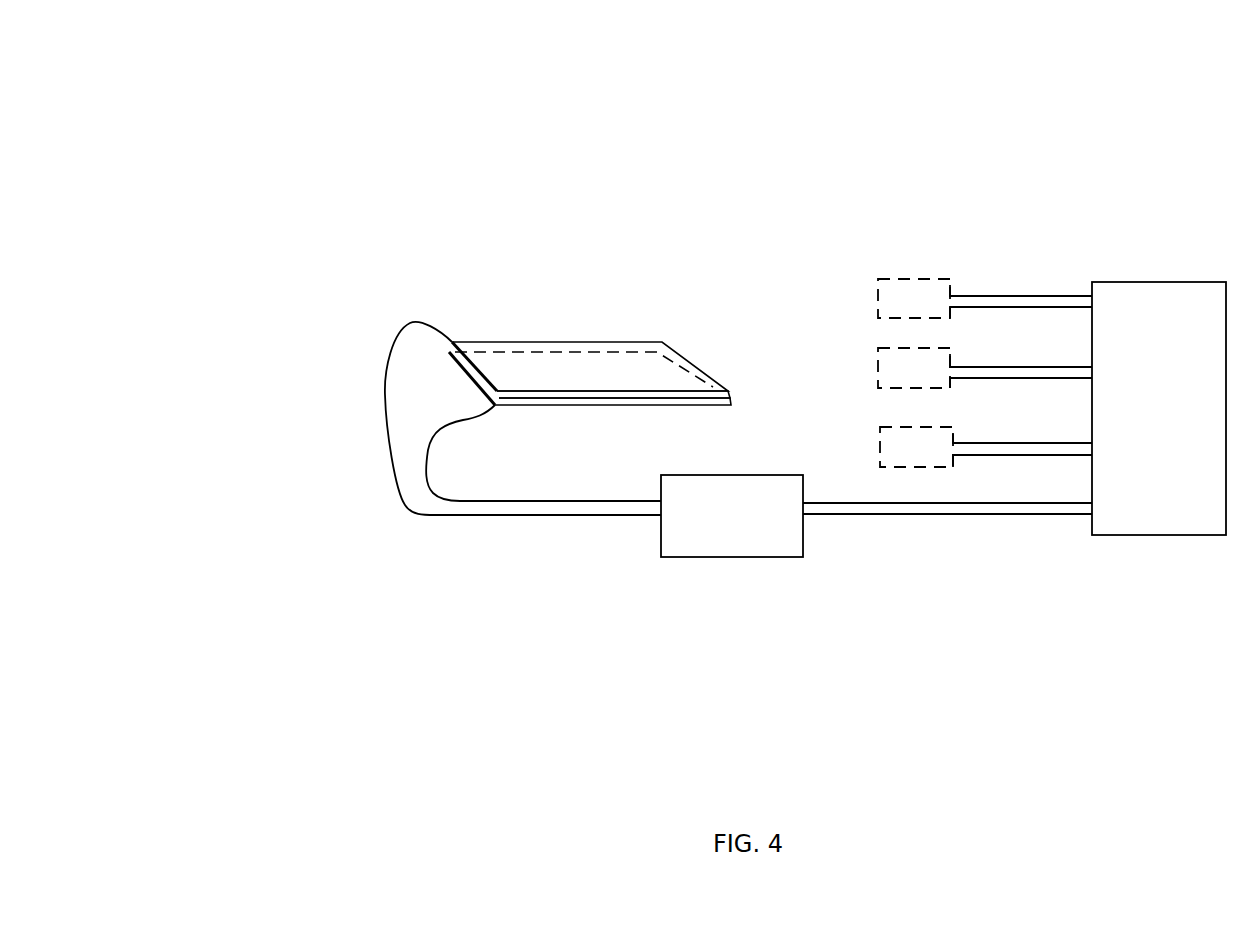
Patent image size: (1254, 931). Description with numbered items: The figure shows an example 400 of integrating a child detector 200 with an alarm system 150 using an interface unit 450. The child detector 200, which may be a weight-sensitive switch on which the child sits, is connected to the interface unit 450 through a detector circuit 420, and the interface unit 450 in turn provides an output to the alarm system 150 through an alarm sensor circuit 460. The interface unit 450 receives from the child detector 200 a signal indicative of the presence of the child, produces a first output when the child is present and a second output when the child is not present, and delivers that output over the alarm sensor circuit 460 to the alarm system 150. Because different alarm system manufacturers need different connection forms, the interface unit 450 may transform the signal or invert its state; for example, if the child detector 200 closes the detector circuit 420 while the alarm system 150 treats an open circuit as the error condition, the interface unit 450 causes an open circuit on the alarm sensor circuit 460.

The example 400 is at (280, 47).
The child detector 200 is at (578, 342).
The detector circuit 420 is at (608, 501).
The interface unit 450 is at (765, 475).
The alarm sensor circuit 460 is at (825, 501).
The alarm system 150 is at (1172, 282).